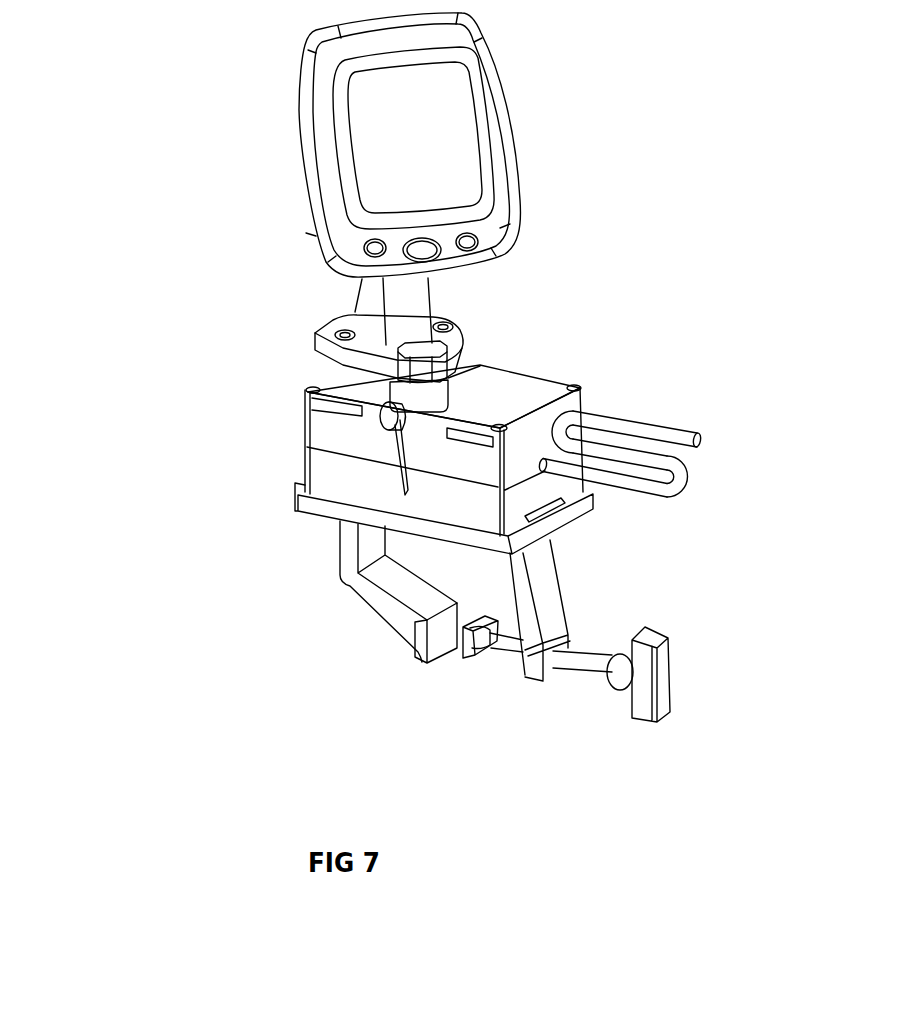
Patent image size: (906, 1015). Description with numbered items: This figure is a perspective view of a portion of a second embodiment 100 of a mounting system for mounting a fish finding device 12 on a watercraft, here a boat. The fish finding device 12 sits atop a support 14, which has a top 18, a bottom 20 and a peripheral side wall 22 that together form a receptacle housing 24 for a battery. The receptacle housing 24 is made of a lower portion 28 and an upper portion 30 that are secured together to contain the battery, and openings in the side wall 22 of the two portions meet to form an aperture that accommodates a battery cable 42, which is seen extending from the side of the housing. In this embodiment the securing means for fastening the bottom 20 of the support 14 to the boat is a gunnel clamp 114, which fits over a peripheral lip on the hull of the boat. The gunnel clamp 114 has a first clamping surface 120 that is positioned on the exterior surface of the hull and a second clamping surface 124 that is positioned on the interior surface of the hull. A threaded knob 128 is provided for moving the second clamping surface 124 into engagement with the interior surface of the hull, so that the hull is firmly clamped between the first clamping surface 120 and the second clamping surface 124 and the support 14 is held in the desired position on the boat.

The fish finding device 12 is at (482, 142).
The support 14 is at (587, 402).
The top 18 is at (522, 393).
The bottom 20 is at (567, 525).
The peripheral side wall 22 is at (338, 472).
The receptacle housing 24 is at (343, 442).
The lower portion 28 is at (315, 432).
The upper portion 30 is at (320, 468).
The battery cable 42 is at (670, 430).
The second embodiment 100 is at (165, 548).
The gunnel clamp 114 is at (613, 594).
The first clamping surface 120 is at (423, 652).
The second clamping surface 124 is at (463, 657).
The threaded knob 128 is at (668, 670).